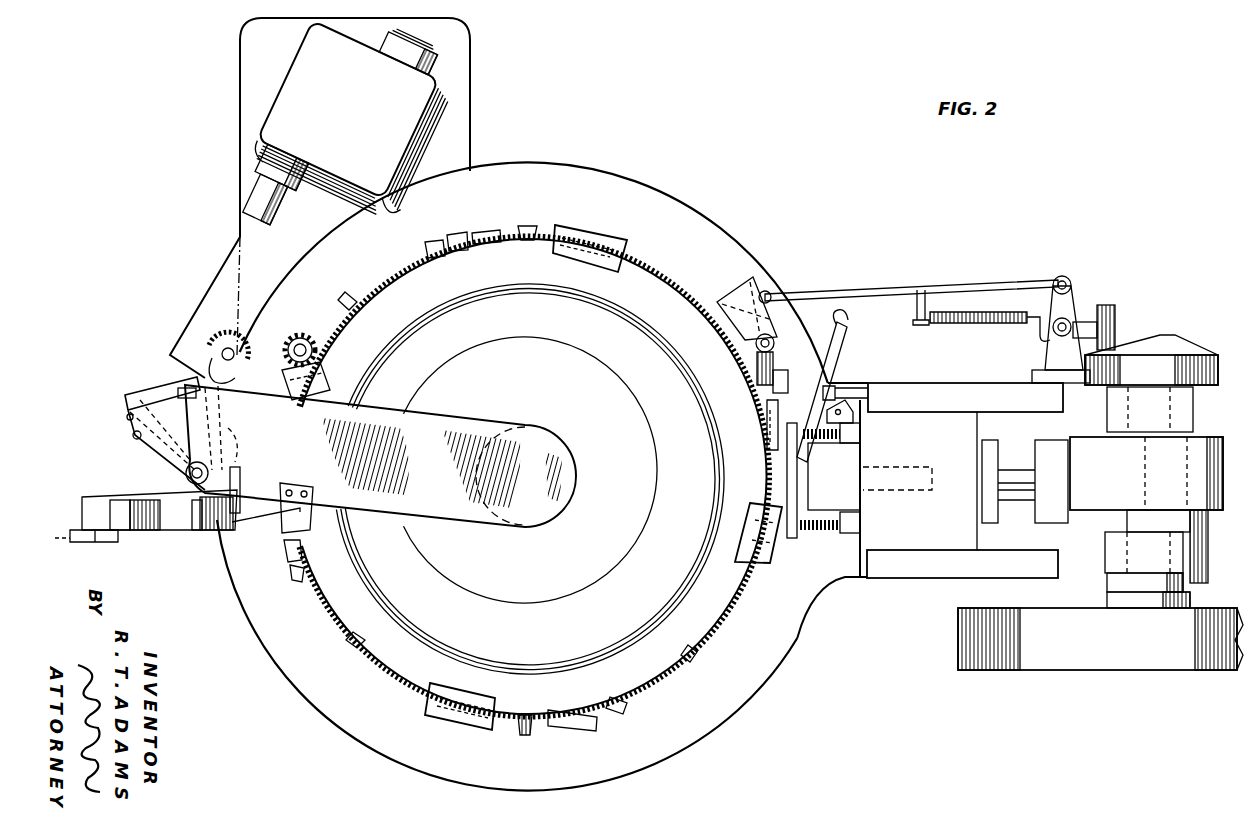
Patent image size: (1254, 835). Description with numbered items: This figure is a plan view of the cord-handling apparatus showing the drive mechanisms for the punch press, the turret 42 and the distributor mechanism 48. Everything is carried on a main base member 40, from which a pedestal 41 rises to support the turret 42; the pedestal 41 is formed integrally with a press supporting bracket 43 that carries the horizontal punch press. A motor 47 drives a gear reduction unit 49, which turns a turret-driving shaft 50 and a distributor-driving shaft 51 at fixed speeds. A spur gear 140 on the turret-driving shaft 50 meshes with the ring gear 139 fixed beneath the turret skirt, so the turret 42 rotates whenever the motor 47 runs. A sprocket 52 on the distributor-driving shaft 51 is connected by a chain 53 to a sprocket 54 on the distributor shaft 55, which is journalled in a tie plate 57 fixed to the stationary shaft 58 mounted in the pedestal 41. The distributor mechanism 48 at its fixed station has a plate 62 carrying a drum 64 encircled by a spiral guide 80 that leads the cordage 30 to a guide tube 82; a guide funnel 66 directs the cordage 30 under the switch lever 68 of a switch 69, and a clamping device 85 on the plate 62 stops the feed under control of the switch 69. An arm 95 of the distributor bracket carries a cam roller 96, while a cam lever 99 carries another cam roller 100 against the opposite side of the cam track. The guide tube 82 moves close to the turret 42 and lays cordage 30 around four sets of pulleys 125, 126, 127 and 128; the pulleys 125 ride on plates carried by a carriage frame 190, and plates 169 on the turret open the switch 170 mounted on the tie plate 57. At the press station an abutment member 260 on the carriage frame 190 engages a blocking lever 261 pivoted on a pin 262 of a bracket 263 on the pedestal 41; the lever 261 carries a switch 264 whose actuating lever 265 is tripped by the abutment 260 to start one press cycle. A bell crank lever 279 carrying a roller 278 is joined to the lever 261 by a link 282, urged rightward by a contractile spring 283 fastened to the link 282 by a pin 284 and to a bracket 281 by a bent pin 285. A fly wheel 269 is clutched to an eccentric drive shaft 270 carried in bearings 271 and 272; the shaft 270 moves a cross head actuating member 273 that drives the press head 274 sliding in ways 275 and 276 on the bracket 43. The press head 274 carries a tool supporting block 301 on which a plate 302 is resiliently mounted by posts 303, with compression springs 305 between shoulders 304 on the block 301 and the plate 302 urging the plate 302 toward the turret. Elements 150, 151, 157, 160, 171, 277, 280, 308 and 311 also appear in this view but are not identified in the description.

The cordage 30 is at (65, 540).
The main base member 40 is at (470, 50).
The pedestal 41 is at (716, 718).
The turret 42 is at (701, 253).
The press supporting bracket 43 is at (860, 582).
The motor 47 is at (276, 128).
The distributor mechanism 48 is at (115, 396).
The gear reduction unit 49 is at (232, 264).
The turret-driving shaft 50 is at (295, 342).
The distributor-driving shaft 51 is at (230, 348).
The sprocket 52 is at (216, 345).
The chain 53 is at (210, 372).
The sprocket 54 is at (242, 445).
The distributor shaft 55 is at (186, 473).
The tie plate 57 is at (412, 425).
The stationary shaft 58 is at (500, 438).
The plate 62 is at (97, 497).
The drum 64 is at (178, 530).
The guide funnel 66 is at (98, 542).
The switch lever 68 is at (138, 530).
The switch 69 is at (82, 514).
The spiral guide 80 is at (200, 532).
The guide tube 82 is at (258, 490).
The clamping device 85 is at (248, 522).
The arm 95 is at (218, 428).
The cam roller 96 is at (180, 392).
The cam lever 99 is at (132, 435).
The cam roller 100 is at (126, 417).
The pulleys 125 is at (522, 736).
The pulleys 126 is at (628, 708).
The pulleys 127 is at (353, 645).
The pulleys 128 is at (427, 708).
The ring gear 139 is at (382, 282).
The spur gear 140 is at (305, 340).
The contact 150 is at (476, 724).
The contact 151 is at (458, 722).
The contact block 157 is at (570, 728).
The contact 160 is at (594, 730).
The plates 169 is at (564, 232).
The switch 170 is at (320, 530).
The contact 171 is at (280, 543).
The carriage frame 190 is at (442, 716).
The abutment member 260 is at (766, 402).
The blocking lever 261 is at (758, 360).
The pin 262 is at (755, 344).
The bracket 263 is at (756, 278).
The switch 264 is at (760, 372).
The actuating lever 265 is at (772, 385).
The fly wheel 269 is at (1048, 655).
The eccentric drive shaft 270 is at (1125, 522).
The bearing 271 is at (1112, 414).
The bearing 272 is at (1110, 552).
The cross head actuating member 273 is at (1095, 470).
The press head 274 is at (930, 425).
The way 275 is at (903, 397).
The way 276 is at (925, 575).
The cap 277 is at (1160, 340).
The roller 278 is at (1110, 316).
The bell crank lever 279 is at (1070, 285).
The lever 280 is at (1052, 354).
The bracket 281 is at (1055, 366).
The link 282 is at (818, 294).
The contractile spring 283 is at (957, 310).
The pin 284 is at (912, 298).
The bent pin 285 is at (1038, 330).
The tool supporting block 301 is at (847, 532).
The plate 302 is at (793, 540).
The posts 303 is at (862, 440).
The shoulders 304 is at (855, 418).
The compression springs 305 is at (828, 479).
The hook 308 is at (862, 312).
The lever 311 is at (848, 328).